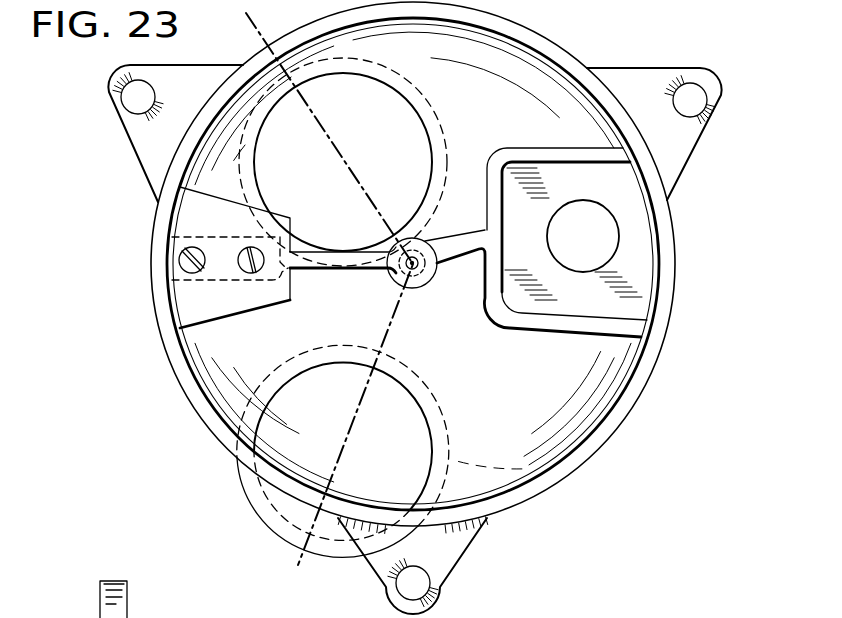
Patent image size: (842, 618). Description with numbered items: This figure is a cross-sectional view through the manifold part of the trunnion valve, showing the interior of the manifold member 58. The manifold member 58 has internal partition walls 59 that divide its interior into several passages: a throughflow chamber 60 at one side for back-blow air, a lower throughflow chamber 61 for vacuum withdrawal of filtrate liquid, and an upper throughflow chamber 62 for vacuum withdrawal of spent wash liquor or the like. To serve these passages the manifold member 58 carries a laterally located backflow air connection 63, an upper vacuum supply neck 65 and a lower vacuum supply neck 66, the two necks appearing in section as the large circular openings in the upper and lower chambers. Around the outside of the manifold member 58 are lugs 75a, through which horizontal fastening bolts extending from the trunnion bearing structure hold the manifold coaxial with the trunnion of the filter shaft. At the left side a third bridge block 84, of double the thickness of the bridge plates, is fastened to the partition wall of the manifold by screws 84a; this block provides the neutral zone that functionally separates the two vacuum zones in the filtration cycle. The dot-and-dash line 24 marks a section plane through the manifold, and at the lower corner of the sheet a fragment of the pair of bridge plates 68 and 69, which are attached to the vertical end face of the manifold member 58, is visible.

The section line 24- 24 is at (246, 13).
The manifold member 58 is at (627, 430).
The partition walls 59 is at (487, 205).
The throughflow chamber 60 is at (642, 277).
The lower throughflow chamber 61 is at (482, 374).
The upper throughflow chamber 62 is at (515, 126).
The backflow air connection 63 is at (612, 215).
The upper vacuum supply neck 65 is at (405, 100).
The lower vacuum supply neck 66 is at (417, 410).
The lugs 75a is at (687, 180).
The third bridge block 84 is at (213, 229).
The screws 84a is at (195, 275).
The bridge plate 69 is at (86, 617).
The bridge plate 68 is at (42, 614).